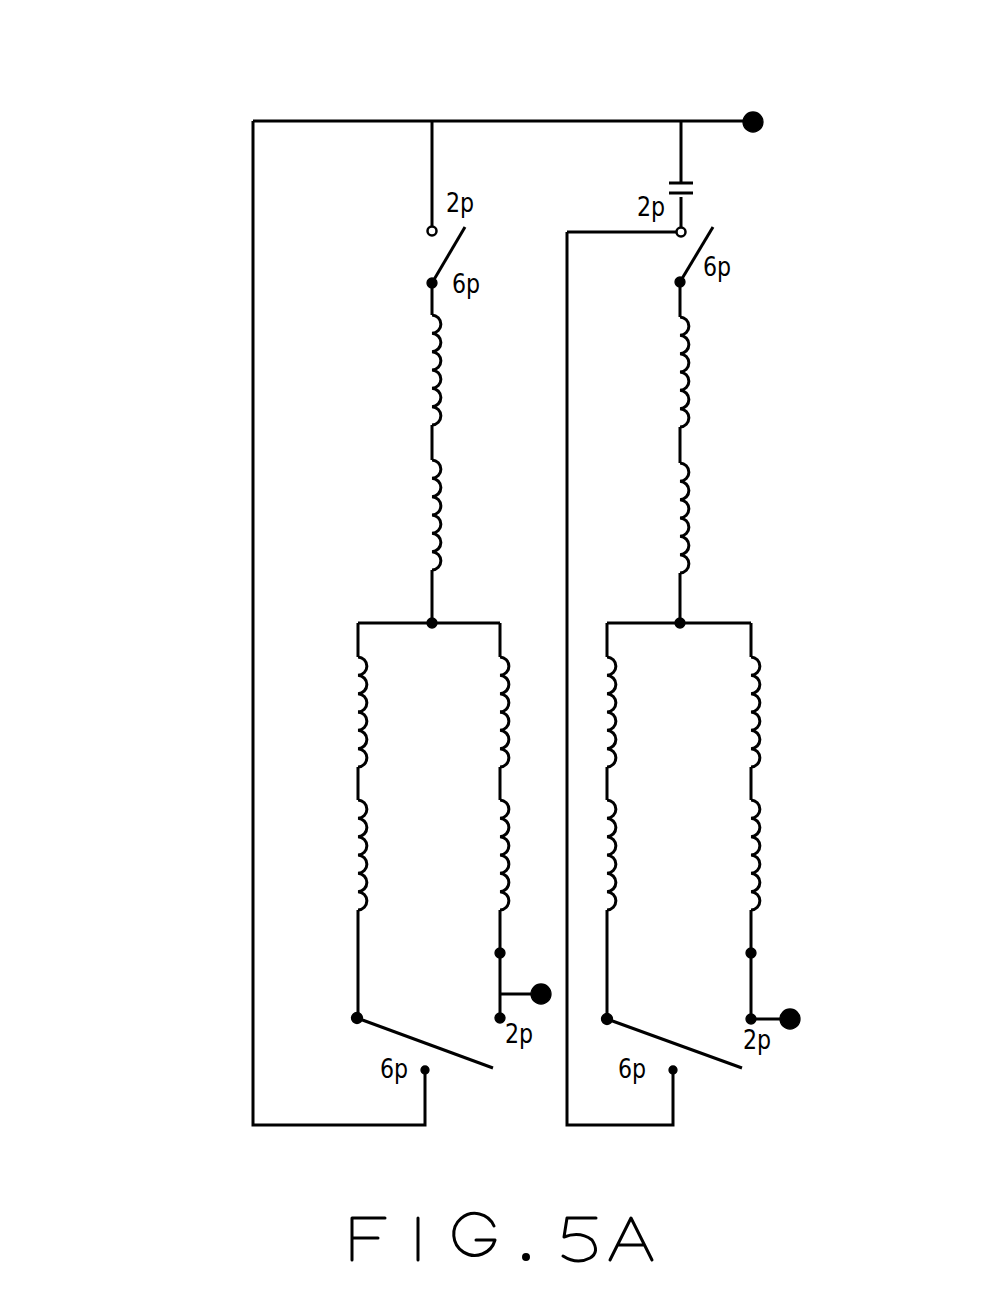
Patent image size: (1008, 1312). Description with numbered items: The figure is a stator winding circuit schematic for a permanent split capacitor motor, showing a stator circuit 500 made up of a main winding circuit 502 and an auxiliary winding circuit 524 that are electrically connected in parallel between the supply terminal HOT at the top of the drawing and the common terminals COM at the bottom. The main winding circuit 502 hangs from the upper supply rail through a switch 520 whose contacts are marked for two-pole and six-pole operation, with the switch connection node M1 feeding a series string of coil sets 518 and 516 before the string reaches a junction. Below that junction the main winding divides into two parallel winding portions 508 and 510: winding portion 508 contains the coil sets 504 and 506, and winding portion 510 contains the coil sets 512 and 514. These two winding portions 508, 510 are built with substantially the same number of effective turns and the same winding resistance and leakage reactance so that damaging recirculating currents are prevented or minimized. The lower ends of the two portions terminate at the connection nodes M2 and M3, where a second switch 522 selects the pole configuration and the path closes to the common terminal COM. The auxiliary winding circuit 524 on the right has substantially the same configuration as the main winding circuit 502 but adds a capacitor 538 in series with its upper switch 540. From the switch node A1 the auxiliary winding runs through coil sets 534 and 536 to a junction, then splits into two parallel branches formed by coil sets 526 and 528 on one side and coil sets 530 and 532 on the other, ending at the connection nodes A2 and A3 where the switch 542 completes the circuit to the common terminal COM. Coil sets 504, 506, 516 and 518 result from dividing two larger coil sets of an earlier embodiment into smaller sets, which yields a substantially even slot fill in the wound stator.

The stator circuit 500 is at (148, 135).
The main winding circuit 502 is at (432, 592).
The coil set 504 is at (358, 703).
The coil set 506 is at (358, 845).
The winding portion 508 is at (358, 787).
The winding portion 510 is at (500, 792).
The coil set 512 is at (500, 705).
The coil set 514 is at (500, 868).
The coil set 516 is at (432, 503).
The coil set 518 is at (432, 362).
The switch 520 is at (443, 262).
The switch 522 is at (458, 1060).
The auxiliary winding circuit 524 is at (683, 595).
The coil set 526 is at (607, 715).
The coil set 528 is at (607, 863).
The coil set 530 is at (751, 727).
The coil set 532 is at (751, 863).
The coil set 534 is at (688, 395).
The coil set 536 is at (688, 518).
The capacitor 538 is at (695, 197).
The switch 540 is at (707, 243).
The switch 542 is at (712, 1060).
The connection node M1 is at (432, 283).
The connection node M2 is at (357, 1018).
The connection node M3 is at (500, 953).
The connection node A1 is at (683, 284).
The connection node A2 is at (610, 1019).
The connection node A3 is at (753, 953).
The hot supply terminal HOT is at (762, 115).
The common terminal COM is at (541, 984).